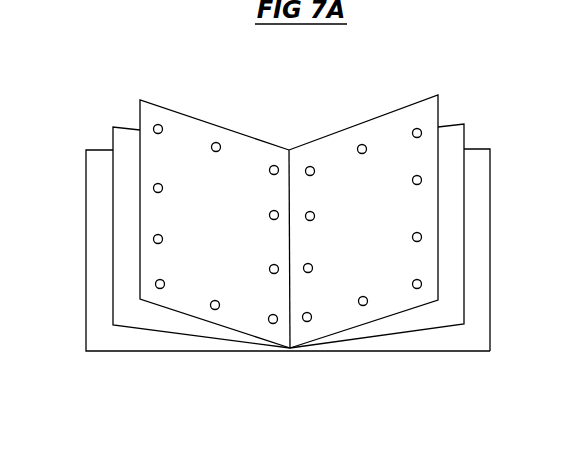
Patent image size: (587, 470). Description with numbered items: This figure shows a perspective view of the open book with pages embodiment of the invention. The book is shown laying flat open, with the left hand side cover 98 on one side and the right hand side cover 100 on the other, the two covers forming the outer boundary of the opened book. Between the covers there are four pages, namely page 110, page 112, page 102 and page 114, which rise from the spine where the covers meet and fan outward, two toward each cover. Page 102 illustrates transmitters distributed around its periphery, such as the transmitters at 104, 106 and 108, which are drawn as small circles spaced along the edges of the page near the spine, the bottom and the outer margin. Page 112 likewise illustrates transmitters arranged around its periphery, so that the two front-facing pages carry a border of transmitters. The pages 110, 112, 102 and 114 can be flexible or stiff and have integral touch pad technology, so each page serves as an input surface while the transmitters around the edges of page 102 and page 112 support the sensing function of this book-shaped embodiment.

The left hand side cover 98 is at (101, 308).
The right hand side cover 100 is at (478, 187).
The page 102 is at (343, 175).
The transmitter 104 is at (307, 322).
The transmitter 106 is at (363, 306).
The transmitter 108 is at (417, 289).
The page 110 is at (139, 312).
The page 112 is at (186, 158).
The page 114 is at (457, 160).